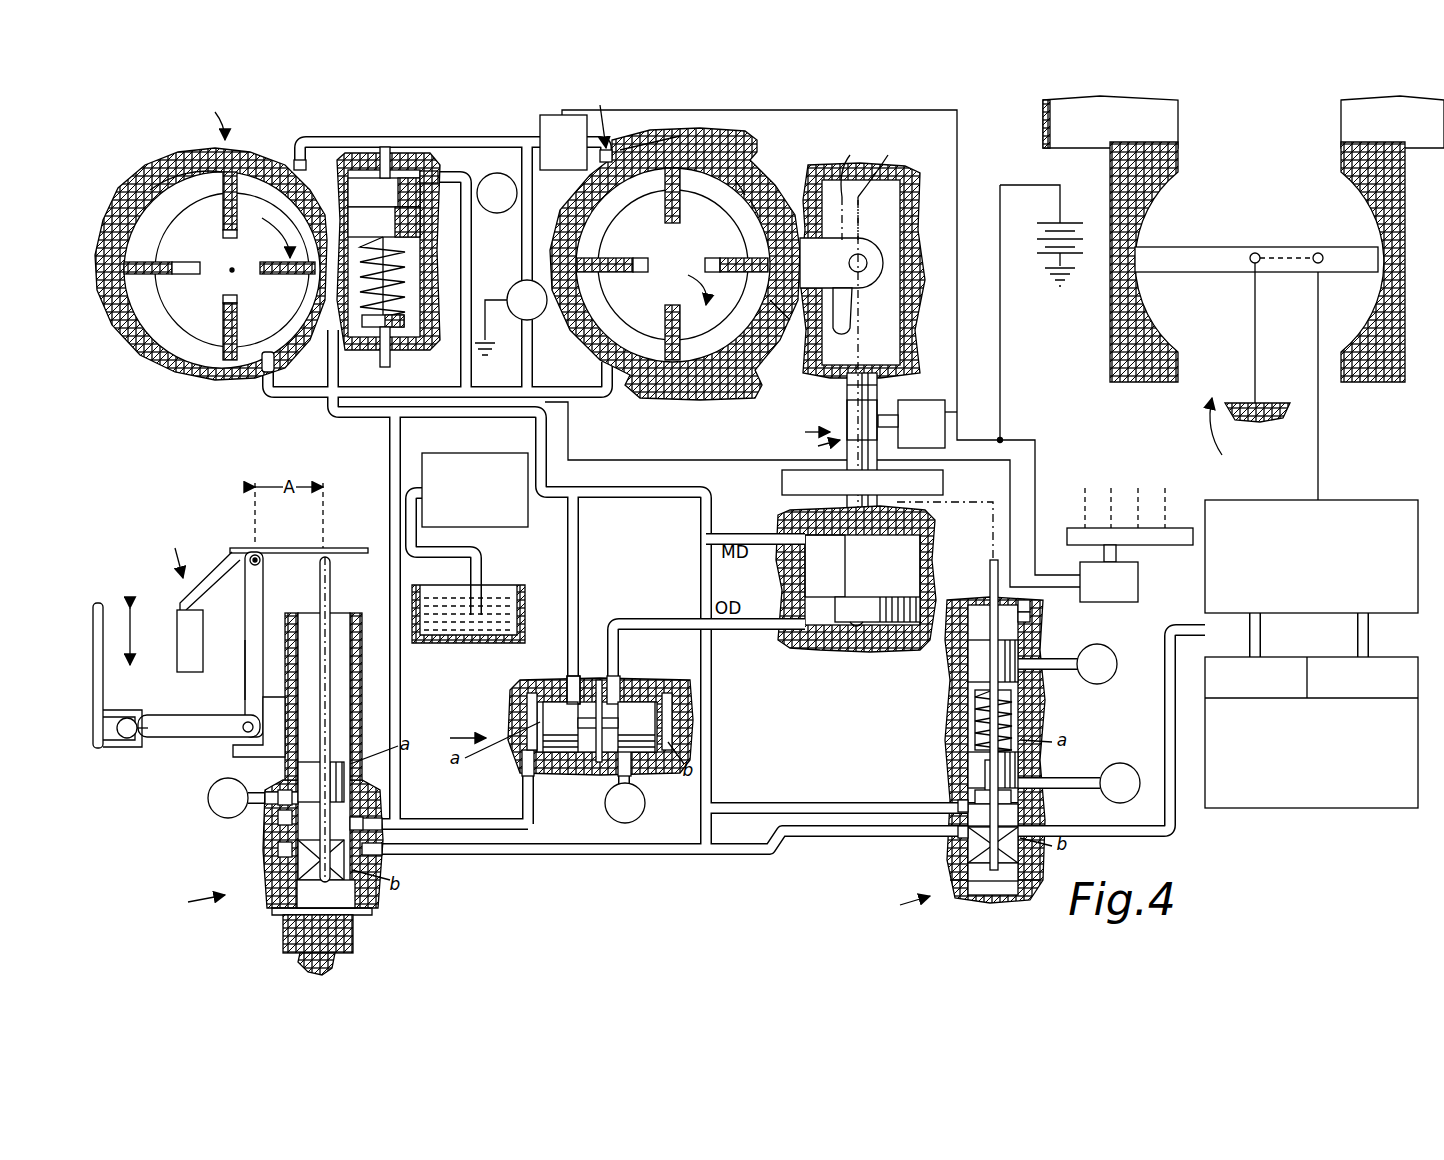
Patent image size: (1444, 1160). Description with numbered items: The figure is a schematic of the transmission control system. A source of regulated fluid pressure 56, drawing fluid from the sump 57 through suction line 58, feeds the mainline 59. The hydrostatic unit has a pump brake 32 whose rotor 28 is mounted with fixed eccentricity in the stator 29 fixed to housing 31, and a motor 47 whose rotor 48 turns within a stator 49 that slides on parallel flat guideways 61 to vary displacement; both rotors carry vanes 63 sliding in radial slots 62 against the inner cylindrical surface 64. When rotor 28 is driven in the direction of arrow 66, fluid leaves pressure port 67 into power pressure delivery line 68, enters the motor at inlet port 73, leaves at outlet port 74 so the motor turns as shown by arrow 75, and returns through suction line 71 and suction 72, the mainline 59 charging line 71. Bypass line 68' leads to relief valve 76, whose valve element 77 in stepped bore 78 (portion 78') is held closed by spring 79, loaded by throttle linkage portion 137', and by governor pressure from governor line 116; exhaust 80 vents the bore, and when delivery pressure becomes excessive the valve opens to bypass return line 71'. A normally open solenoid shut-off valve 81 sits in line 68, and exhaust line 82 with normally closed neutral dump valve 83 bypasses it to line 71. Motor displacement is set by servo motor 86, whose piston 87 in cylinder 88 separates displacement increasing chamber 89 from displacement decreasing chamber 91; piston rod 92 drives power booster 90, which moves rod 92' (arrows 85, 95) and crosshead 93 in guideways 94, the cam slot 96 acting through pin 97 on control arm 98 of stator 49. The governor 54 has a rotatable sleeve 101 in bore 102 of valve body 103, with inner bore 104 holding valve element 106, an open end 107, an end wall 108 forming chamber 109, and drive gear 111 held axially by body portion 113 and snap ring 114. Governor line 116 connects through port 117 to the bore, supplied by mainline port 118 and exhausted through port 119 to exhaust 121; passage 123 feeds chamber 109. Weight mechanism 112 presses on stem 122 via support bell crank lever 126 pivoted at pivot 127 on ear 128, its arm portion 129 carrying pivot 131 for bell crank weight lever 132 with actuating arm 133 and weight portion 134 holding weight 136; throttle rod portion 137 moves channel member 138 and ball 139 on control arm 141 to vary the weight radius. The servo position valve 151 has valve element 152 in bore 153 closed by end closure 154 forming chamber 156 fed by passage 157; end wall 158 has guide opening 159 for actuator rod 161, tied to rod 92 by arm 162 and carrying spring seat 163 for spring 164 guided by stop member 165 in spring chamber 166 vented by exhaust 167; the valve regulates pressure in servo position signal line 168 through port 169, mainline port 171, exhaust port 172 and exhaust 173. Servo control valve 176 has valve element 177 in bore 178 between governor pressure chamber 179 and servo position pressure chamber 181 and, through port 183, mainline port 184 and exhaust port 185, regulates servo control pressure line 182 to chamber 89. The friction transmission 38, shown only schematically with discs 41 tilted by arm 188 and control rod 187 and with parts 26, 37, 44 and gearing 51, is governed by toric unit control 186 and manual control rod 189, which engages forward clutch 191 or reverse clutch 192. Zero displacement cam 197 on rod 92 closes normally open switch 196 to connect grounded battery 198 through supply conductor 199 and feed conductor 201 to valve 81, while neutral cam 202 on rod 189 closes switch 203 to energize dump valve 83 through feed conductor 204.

The input toric disc 26 is at (1125, 100).
The rotor 28 is at (205, 330).
The stator 29 is at (132, 358).
The housing 31 is at (690, 134).
The pump brake 32 is at (210, 116).
The toric disc 37 is at (1110, 335).
The friction transmission 38 is at (1250, 436).
The discs 41 is at (1228, 265).
The output toric disc 44 is at (1400, 100).
The motor 47 is at (603, 116).
The rotor 48 is at (740, 190).
The stator 49 is at (760, 200).
The forward neutral reverse gearing 51 is at (1378, 810).
The governor 54 is at (275, 847).
The source of regulated fluid pressure 56 is at (520, 528).
The sump 57 is at (470, 640).
The suction line 58 is at (480, 578).
The mainline 59 is at (400, 412).
The parallel flat guideways 61 is at (712, 140).
The radial slots 62 is at (224, 236).
The vanes 63 is at (222, 205).
The inner cylindrical surface 64 is at (180, 168).
The arrow 66 is at (262, 240).
The pressure port 67 is at (337, 176).
The power pressure delivery line 68 is at (453, 128).
The bypass line 68' is at (388, 223).
The suction line 71 is at (435, 388).
The bypass return line 71' is at (465, 284).
The suction 72 is at (262, 372).
The inlet port 73 is at (598, 157).
The outlet port 74 is at (622, 330).
The arrow 75 is at (685, 285).
The relief valve 76 is at (390, 150).
The valve element 77 is at (425, 185).
The stepped bore 78 is at (369, 174).
The spring seat 78' is at (411, 293).
The spring 79 is at (408, 302).
The exhaust 80 is at (496, 175).
The normally open solenoid shut-off valve 81 is at (540, 115).
The exhaust line 82 is at (520, 228).
The normally closed solenoid neutral dump valve 83 is at (515, 285).
The movement arrow 85 is at (804, 432).
The servo motor 86 is at (835, 652).
The piston 87 is at (885, 625).
The cylinder 88 is at (935, 552).
The displacement increasing chamber 89 is at (908, 625).
The power booster 90 is at (944, 482).
The displacement decreasing chamber 91 is at (805, 580).
The piston rod 92 is at (844, 420).
The piston rod 92' is at (843, 420).
The crosshead 93 is at (903, 226).
The guideways 94 is at (845, 380).
The movement arrow 95 is at (820, 444).
The cam slot 96 is at (846, 330).
The pin 97 is at (848, 263).
The control arm 98 is at (786, 318).
The rotatable valve sleeve 101 is at (362, 716).
The bore 102 is at (356, 782).
The valve body 103 is at (362, 798).
The inner bore 104 is at (280, 818).
The valve element 106 is at (280, 850).
The open end 107 is at (335, 628).
The end wall 108 is at (283, 922).
The chamber 109 is at (360, 896).
The drive gear 111 is at (355, 940).
The governor weight mechanism 112 is at (158, 597).
The valve body portion 113 is at (340, 962).
The snap ring 114 is at (280, 912).
The governor pressure line 116 is at (340, 362).
The governor port 117 is at (382, 822).
The port 118 is at (382, 850).
The exhaust port 119 is at (282, 790).
The exhaust 121 is at (208, 798).
The stem portion 122 is at (330, 572).
The passage 123 is at (300, 860).
The support bell crank lever 126 is at (244, 660).
The pivot 127 is at (245, 722).
The ear 128 is at (240, 746).
The arm portion 129 is at (262, 602).
The pivot 131 is at (256, 555).
The bell crank weight lever 132 is at (246, 548).
The actuating arm 133 is at (300, 546).
The weight portion 134 is at (232, 556).
The weight 136 is at (178, 634).
The throttle control rod portion 137 is at (111, 650).
The throttle linkage portion 137' is at (410, 353).
The annular internal channel member 138 is at (115, 748).
The ball 139 is at (128, 740).
The control arm 141 is at (162, 712).
The servo position valve 151 is at (959, 757).
The valve element 152 is at (1020, 820).
The bore 153 is at (1020, 800).
The end closure 154 is at (990, 904).
The chamber 156 is at (1005, 882).
The passage 157 is at (976, 860).
The end wall 158 is at (1022, 604).
The guide opening 159 is at (1024, 616).
The displacement position actuator rod 161 is at (990, 576).
The arm 162 is at (992, 520).
The spring seat 163 is at (1020, 690).
The spring 164 is at (1015, 706).
The spring guide and stop member 165 is at (1016, 726).
The spring chamber portion 166 is at (962, 722).
The exhaust 167 is at (1115, 660).
The servo position signal line 168 is at (785, 802).
The port 169 is at (960, 806).
The port 171 is at (950, 832).
The exhaust port 172 is at (1012, 762).
The exhaust 173 is at (1124, 763).
The servo control valve 176 is at (558, 726).
The valve element 177 is at (574, 754).
The bore 178 is at (614, 703).
The governor pressure chamber 179 is at (540, 712).
The servo position pressure chamber 181 is at (664, 710).
The servo control pressure line 182 is at (676, 622).
The port 183 is at (600, 700).
The port 184 is at (572, 690).
The exhaust port 185 is at (606, 786).
The toric unit control system 186 is at (1378, 502).
The control rod 187 is at (1320, 452).
The arm 188 is at (1280, 256).
The manual control rod 189 is at (1194, 546).
The forward clutch 191 is at (1283, 657).
The reverse clutch 192 is at (1405, 657).
The normally open switch 196 is at (960, 432).
The zero displacement cam 197 is at (948, 404).
The grounded battery 198 is at (1044, 240).
The supply conductor 199 is at (1001, 332).
The feed conductor 201 is at (958, 165).
The neutral cam 202 is at (1118, 552).
The normally open switch 203 is at (1140, 585).
The feed conductor 204 is at (1036, 462).